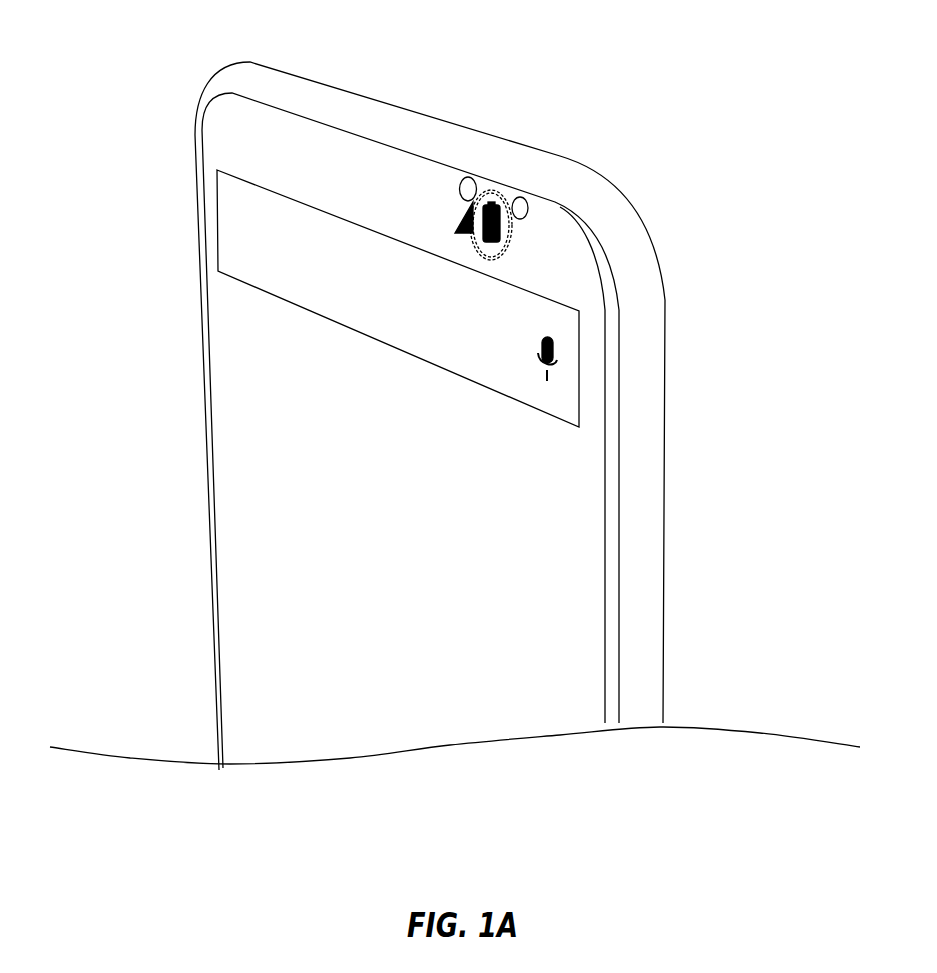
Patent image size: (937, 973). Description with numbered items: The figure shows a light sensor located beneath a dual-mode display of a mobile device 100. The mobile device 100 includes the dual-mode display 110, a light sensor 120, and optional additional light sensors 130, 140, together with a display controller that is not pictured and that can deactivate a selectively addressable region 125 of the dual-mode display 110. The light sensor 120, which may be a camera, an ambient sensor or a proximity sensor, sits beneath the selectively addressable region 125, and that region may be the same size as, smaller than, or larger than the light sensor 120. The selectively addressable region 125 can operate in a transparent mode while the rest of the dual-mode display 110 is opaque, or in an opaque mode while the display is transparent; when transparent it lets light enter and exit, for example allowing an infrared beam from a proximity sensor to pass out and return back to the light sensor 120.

The mobile device 100 is at (217, 73).
The dual-mode display 110 is at (257, 504).
The light sensor 120 is at (488, 198).
The selectively addressable region 125 is at (490, 262).
The optional additional light sensor 130 is at (469, 177).
The optional additional light sensor 140 is at (530, 208).